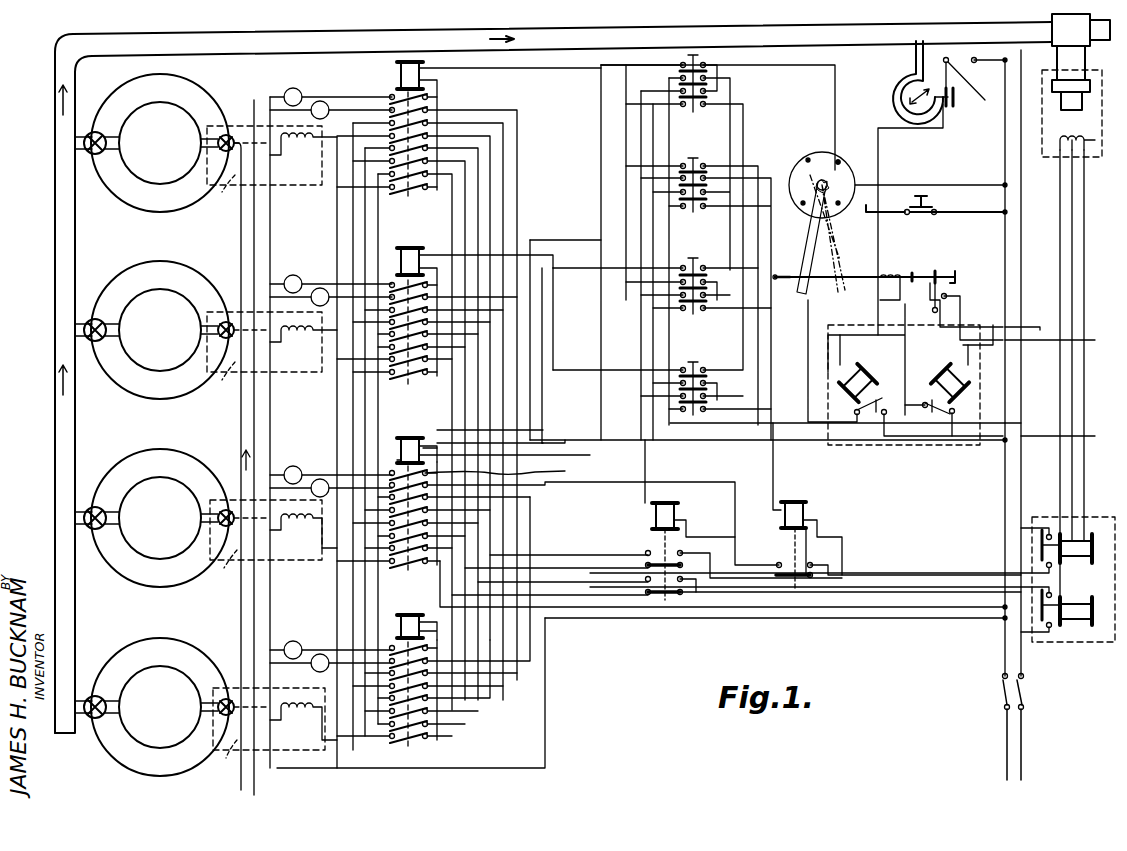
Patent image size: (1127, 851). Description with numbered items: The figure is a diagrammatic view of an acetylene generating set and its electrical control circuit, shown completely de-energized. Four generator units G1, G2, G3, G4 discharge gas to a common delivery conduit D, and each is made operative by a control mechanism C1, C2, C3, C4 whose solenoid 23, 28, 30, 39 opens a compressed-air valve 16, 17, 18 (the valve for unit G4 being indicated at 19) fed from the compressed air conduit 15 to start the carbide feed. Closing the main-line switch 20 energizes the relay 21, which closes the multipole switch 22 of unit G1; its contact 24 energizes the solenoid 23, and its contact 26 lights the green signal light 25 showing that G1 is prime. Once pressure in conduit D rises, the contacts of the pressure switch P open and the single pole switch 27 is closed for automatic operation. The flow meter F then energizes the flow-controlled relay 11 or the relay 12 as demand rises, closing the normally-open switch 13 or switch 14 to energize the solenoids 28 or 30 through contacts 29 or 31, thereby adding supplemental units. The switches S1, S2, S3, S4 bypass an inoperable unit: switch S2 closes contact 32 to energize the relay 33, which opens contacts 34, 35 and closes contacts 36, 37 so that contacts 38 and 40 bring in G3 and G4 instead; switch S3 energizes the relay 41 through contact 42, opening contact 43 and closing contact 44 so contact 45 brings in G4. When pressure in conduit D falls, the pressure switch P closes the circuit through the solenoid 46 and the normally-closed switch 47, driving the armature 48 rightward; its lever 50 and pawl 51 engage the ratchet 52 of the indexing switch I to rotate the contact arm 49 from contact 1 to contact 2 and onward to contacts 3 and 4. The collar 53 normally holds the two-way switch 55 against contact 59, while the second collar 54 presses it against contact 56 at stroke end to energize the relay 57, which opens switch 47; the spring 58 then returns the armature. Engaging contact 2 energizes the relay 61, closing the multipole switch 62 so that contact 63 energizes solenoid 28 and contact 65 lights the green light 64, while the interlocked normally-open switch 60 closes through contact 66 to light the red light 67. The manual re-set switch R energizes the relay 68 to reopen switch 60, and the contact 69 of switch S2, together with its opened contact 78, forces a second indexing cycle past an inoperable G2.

The delivery conduit D is at (50, 237).
The pressure switch P is at (900, 74).
The flow meter F is at (1078, 56).
The single pole switch 27 is at (975, 87).
The manual re-set switch R is at (928, 204).
The indexing switch I is at (798, 162).
The contact arm 49 is at (822, 152).
The ratchet 52 is at (852, 180).
The contact 1 is at (807, 155).
The contact 2 is at (799, 197).
The contact 3 is at (841, 197).
The dial contact 4 is at (834, 156).
The pawl 51 is at (815, 200).
The lever 50 is at (812, 242).
The spring 58 is at (783, 290).
The second collar 54 is at (912, 274).
The solenoid 46 is at (888, 290).
The contact 59 is at (916, 274).
The collar 53 is at (938, 270).
The armature 48 is at (950, 280).
The two-way switch 55 is at (940, 290).
The contact 56 is at (952, 296).
The relay 68 is at (852, 370).
The relay 57 is at (956, 372).
The normally-open switch 60 is at (905, 368).
The normally-closed switch 47 is at (930, 412).
The generator unit G4 is at (154, 143).
The generator unit G3 is at (154, 330).
The generator unit G2 is at (154, 518).
The generator unit G1 is at (154, 707).
The valve switch 19 is at (228, 134).
The compressed-air valve 18 is at (226, 321).
The compressed-air valve 17 is at (226, 509).
The compressed-air valve 16 is at (232, 698).
The control mechanism C4 is at (217, 207).
The control mechanism C3 is at (221, 395).
The control mechanism C2 is at (223, 587).
The control mechanism C1 is at (219, 769).
The compressed air conduit 15 is at (240, 235).
The solenoid 39 is at (298, 145).
The solenoid 30 is at (298, 334).
The solenoid 28 is at (298, 522).
The solenoid 23 is at (298, 712).
The green light 64 is at (295, 466).
The red light 67 is at (321, 479).
The green signal light 25 is at (294, 641).
The relay 61 is at (410, 437).
The contact 65 is at (425, 457).
The multipole switch 62 is at (393, 468).
The contact 66 is at (495, 472).
The contact 63 is at (400, 568).
The relay 21 is at (412, 615).
The contact 26 is at (396, 653).
The contact 45 is at (480, 686).
The contact 40 is at (470, 698).
The contact 38 is at (465, 711).
The contact 31 is at (450, 724).
The multipole switch 22 is at (405, 760).
The contact 24 is at (412, 748).
The contact 29 is at (424, 748).
The switch S4 is at (696, 118).
The switch S1 is at (693, 156).
The switch S2 is at (690, 260).
The switch S3 is at (698, 360).
The contact 78 is at (700, 268).
The contact 69 is at (703, 282).
The contact 32 is at (705, 298).
The contact 42 is at (700, 440).
The relay 33 is at (672, 514).
The contact 37 is at (646, 550).
The contact 35 is at (648, 564).
The contact 36 is at (648, 582).
The contact 34 is at (650, 598).
The relay 41 is at (805, 512).
The contact 44 is at (779, 562).
The contact 43 is at (776, 598).
The normally-open switch 14 is at (1045, 520).
The relay 12 is at (1095, 555).
The normally-open switch 13 is at (1040, 638).
The flow-controlled relay 11 is at (1076, 626).
The switch 20 is at (995, 696).